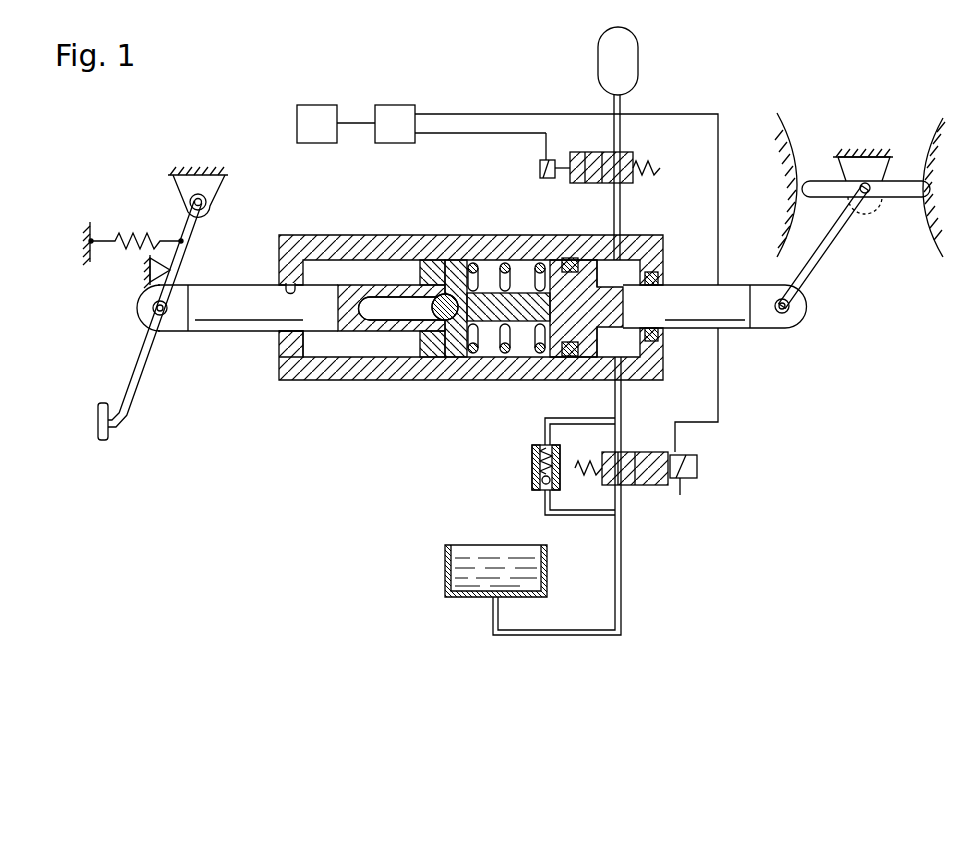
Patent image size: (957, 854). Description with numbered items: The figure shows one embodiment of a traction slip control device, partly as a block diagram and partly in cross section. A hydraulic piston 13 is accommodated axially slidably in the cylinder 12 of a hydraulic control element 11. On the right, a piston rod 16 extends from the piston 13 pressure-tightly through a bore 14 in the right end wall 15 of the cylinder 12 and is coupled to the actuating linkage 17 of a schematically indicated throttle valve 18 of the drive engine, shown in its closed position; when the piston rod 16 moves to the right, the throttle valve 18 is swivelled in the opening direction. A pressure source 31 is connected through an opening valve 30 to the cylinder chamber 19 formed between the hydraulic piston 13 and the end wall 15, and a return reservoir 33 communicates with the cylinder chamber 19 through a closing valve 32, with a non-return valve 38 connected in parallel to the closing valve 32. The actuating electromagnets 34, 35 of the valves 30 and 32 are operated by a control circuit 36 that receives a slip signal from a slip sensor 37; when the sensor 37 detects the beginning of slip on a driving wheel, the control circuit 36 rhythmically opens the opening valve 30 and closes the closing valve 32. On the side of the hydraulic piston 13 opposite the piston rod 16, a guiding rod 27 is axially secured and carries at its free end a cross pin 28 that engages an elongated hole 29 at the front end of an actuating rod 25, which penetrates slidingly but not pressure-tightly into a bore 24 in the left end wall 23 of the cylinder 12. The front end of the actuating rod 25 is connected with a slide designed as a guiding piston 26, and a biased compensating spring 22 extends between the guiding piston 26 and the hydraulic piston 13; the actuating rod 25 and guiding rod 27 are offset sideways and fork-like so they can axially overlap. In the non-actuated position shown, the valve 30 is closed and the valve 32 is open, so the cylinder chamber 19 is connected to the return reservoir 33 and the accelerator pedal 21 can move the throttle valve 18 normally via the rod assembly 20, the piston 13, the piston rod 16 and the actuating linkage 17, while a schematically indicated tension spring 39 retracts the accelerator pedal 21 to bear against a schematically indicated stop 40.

The hydraulic control element 11 is at (393, 236).
The cylinder 12 is at (545, 248).
The hydraulic piston 13 is at (588, 260).
The bore 14 is at (666, 287).
The right end wall 15 is at (658, 344).
The piston rod 16 is at (733, 308).
The actuating linkage 17 is at (830, 252).
The throttle valve 18 is at (903, 197).
The cylinder chamber 19 is at (636, 262).
The rod assembly 20 is at (341, 283).
The accelerator pedal 21 is at (128, 418).
The compensating spring 22 is at (500, 262).
The left end wall 23 is at (284, 342).
The bore 24 is at (290, 283).
The actuating rod 25 is at (232, 300).
The guiding piston 26 is at (446, 260).
The guiding rod 27 is at (505, 322).
The cross pin 28 is at (449, 322).
The elongated hole 29 is at (392, 322).
The opening valve 30 is at (630, 152).
The pressure source 31 is at (628, 62).
The closing valve 32 is at (640, 487).
The return reservoir 33 is at (550, 576).
The actuating electromagnet 34 is at (540, 168).
The actuating electromagnet 35 is at (700, 468).
The control circuit 36 is at (396, 115).
The slip sensor 37 is at (318, 115).
The non-return valve 38 is at (528, 462).
The tension spring 39 is at (150, 237).
The stop 40 is at (148, 268).